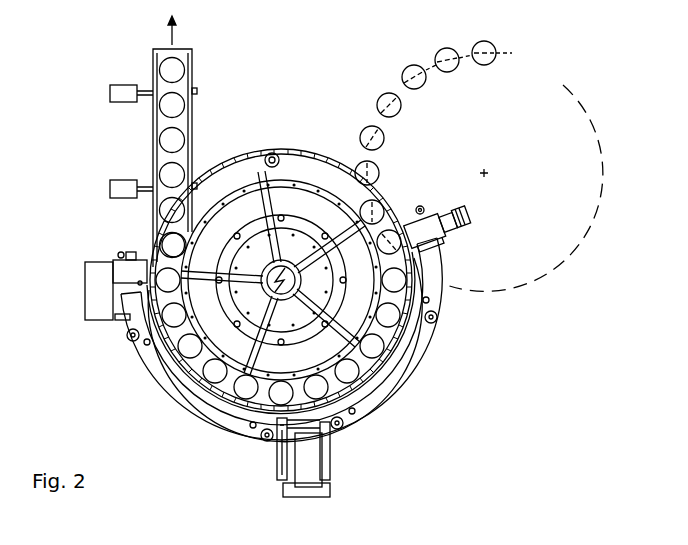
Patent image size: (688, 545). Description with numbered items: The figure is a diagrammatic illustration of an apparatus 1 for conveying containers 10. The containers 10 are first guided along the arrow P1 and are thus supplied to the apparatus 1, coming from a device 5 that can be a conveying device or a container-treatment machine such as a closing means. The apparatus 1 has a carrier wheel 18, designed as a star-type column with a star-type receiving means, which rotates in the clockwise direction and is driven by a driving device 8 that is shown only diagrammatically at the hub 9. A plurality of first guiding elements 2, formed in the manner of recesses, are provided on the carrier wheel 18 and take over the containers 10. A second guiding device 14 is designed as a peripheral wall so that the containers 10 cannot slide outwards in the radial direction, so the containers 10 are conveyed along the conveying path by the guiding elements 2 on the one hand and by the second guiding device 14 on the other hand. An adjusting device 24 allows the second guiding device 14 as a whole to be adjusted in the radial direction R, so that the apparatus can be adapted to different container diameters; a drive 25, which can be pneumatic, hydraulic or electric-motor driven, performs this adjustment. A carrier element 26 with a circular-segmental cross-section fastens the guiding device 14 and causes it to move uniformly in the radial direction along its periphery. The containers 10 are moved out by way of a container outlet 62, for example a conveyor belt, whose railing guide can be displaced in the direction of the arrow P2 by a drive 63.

The apparatus 1 is at (242, 452).
The first guiding elements 2 is at (290, 172).
The device 5 is at (539, 218).
The driving device 8 is at (277, 268).
The hub / axis 9 is at (268, 274).
The containers 10 is at (409, 72).
The second guiding device 14 is at (394, 352).
The carrier wheel 18 is at (359, 375).
The adjusting device 24 is at (259, 468).
The drive 25 is at (426, 212).
The carrier element 26 is at (396, 387).
The container outlet 62 is at (182, 85).
The drive 63 is at (125, 91).
The arrow P1 is at (564, 83).
The arrow P2 is at (149, 147).
The radial direction R is at (255, 298).